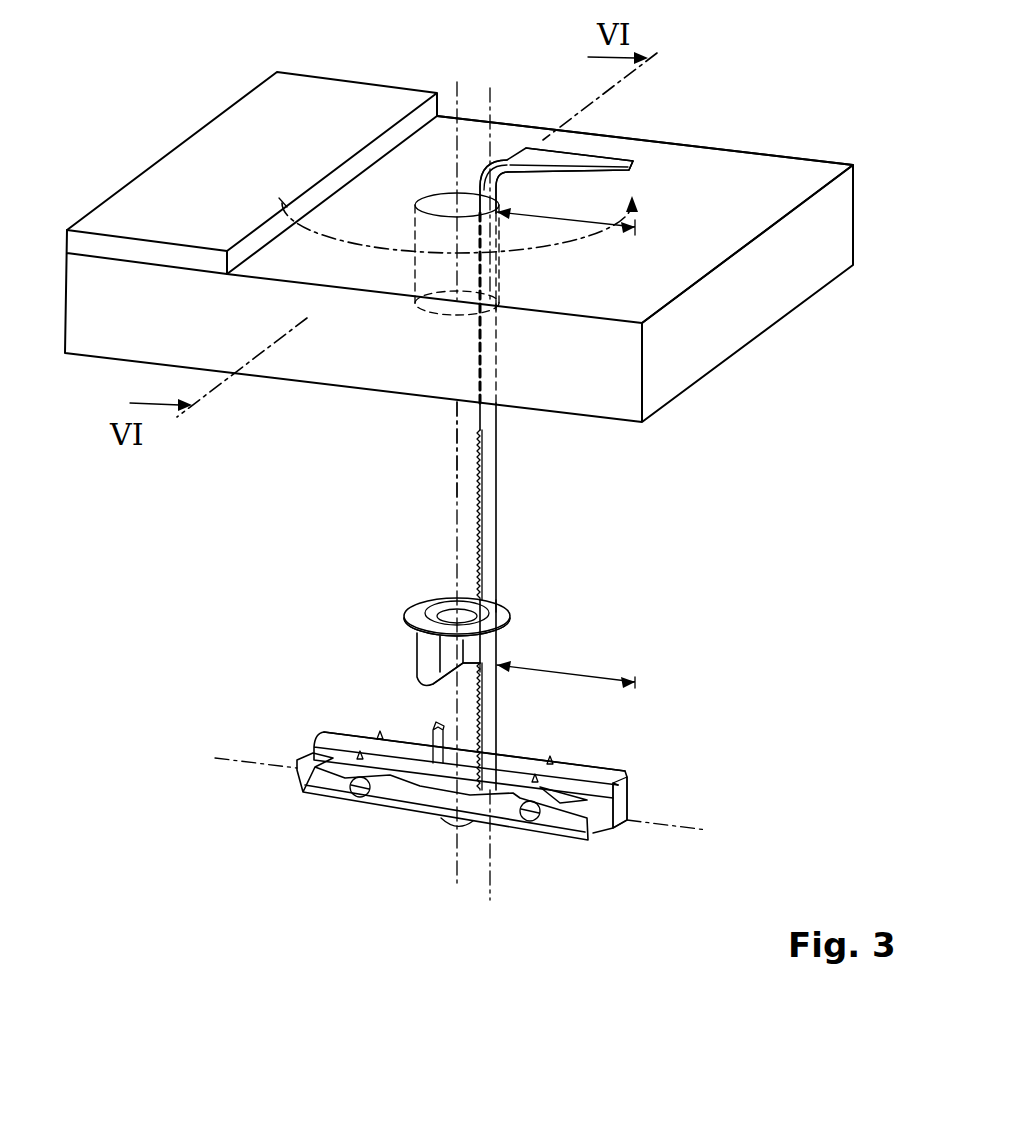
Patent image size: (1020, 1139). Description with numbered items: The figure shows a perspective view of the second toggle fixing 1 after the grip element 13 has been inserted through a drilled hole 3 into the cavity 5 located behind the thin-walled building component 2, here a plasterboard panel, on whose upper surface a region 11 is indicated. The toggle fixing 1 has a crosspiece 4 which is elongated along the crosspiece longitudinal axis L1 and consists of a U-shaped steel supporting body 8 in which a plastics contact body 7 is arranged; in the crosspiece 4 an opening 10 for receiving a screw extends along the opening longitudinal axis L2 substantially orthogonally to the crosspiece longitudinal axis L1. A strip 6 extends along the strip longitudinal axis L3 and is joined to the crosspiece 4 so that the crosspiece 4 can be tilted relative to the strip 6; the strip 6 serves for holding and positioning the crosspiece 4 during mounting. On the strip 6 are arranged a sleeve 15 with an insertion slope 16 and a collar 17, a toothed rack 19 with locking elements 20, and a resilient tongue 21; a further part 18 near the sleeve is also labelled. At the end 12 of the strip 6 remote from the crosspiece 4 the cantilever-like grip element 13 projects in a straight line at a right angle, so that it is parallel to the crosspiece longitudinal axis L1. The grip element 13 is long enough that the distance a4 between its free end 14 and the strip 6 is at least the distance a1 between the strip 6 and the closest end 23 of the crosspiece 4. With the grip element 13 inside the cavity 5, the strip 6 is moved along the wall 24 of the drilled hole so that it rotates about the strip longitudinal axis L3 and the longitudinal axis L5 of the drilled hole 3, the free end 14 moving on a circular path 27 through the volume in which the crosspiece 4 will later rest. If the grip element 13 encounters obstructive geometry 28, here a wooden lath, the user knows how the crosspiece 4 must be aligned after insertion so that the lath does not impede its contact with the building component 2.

The toggle fixing 1 is at (542, 727).
The thin-walled building component 2 is at (720, 345).
The drilled hole 3 is at (466, 200).
The crosspiece 4 is at (327, 790).
The cavity 5 is at (556, 58).
The strip 6 is at (490, 526).
The contact body 7 is at (580, 772).
The supporting body 8 is at (387, 797).
The opening 10 is at (445, 835).
The upper surface of component 11 is at (752, 184).
The end of the strip 12 is at (490, 192).
The grip element 13 is at (580, 157).
The free end 14 is at (628, 167).
The sleeve 15 is at (430, 645).
The insertion slope 16 is at (473, 680).
The collar 17 is at (506, 620).
The flange opening 18 is at (504, 603).
The toothed rack 19 is at (490, 558).
The locking elements 20 is at (410, 610).
The resilient tongue 21 is at (472, 300).
The end of the crosspiece 23 is at (623, 800).
The wall of the drilled hole 24 is at (496, 305).
The circular path 27 is at (380, 227).
The obstructive geometry 28 is at (322, 95).
The distance a1 is at (573, 670).
The distance a4 is at (547, 220).
The crosspiece longitudinal axis L1 is at (690, 828).
The opening longitudinal axis L2 is at (457, 887).
The strip longitudinal axis L3 is at (490, 890).
The longitudinal axis of the drilled hole L5 is at (457, 450).